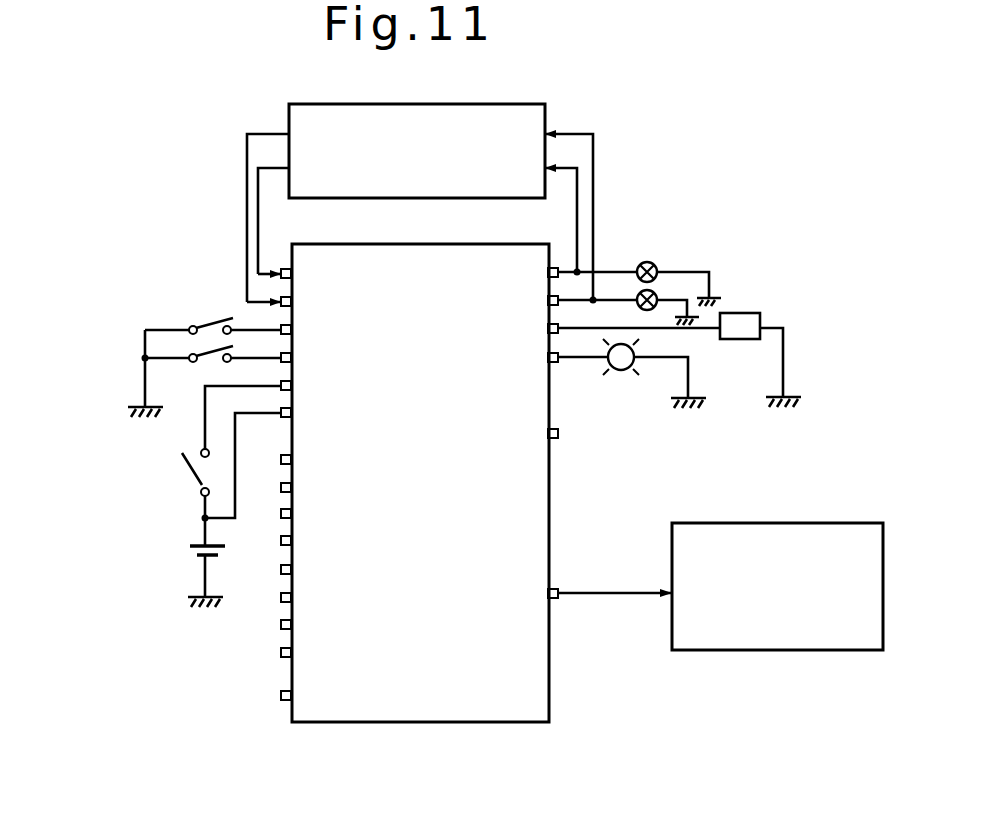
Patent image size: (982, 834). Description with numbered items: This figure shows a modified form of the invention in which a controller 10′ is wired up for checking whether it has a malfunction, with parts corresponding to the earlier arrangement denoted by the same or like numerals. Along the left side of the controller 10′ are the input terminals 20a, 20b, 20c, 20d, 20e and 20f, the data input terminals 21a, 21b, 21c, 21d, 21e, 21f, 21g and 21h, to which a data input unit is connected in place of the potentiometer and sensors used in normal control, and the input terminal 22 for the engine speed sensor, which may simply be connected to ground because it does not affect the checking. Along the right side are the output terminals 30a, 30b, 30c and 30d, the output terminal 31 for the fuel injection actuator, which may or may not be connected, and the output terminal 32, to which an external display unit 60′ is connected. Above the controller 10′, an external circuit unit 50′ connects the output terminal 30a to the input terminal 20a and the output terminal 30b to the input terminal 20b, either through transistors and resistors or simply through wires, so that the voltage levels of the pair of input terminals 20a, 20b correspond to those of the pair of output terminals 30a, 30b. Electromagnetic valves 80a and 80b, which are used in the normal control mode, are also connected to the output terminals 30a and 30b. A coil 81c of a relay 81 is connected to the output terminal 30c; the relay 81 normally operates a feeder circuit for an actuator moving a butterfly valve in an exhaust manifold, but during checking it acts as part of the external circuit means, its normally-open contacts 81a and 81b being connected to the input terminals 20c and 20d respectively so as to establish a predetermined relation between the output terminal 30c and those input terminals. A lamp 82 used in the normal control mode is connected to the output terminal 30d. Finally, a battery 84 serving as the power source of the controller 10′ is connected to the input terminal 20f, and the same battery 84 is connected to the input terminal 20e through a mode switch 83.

The controller 10′ is at (462, 724).
The external circuit unit 50′ is at (525, 104).
The external display unit 60′ is at (809, 523).
The input terminal 20a is at (292, 272).
The input terminal 20b is at (292, 300).
The input terminal 20c is at (292, 328).
The input terminal 20d is at (292, 356).
The input terminal 20e is at (292, 384).
The input terminal 20f is at (292, 411).
The data input terminal 21a is at (292, 458).
The data input terminal 21b is at (292, 486).
The data input terminal 21c is at (292, 512).
The data input terminal 21d is at (292, 539).
The data input terminal 21e is at (292, 568).
The data input terminal 21f is at (292, 596).
The data input terminal 21g is at (292, 623).
The data input terminal 21h is at (292, 651).
The input terminal 22 is at (281, 695).
The output terminal 30a is at (546, 270).
The output terminal 30b is at (546, 298).
The output terminal 30c is at (546, 326).
The output terminal 30d is at (546, 355).
The output terminal 31 is at (558, 436).
The output terminal 32 is at (548, 593).
The electromagnetic valve 80a is at (645, 262).
The electromagnetic valve 80b is at (657, 294).
The relay 81 is at (757, 311).
The normally-open contact 81a is at (213, 320).
The normally-open contact 81b is at (203, 350).
The coil 81c is at (726, 339).
The lamp 82 is at (621, 372).
The mode switch 83 is at (190, 481).
The battery 84 is at (190, 552).